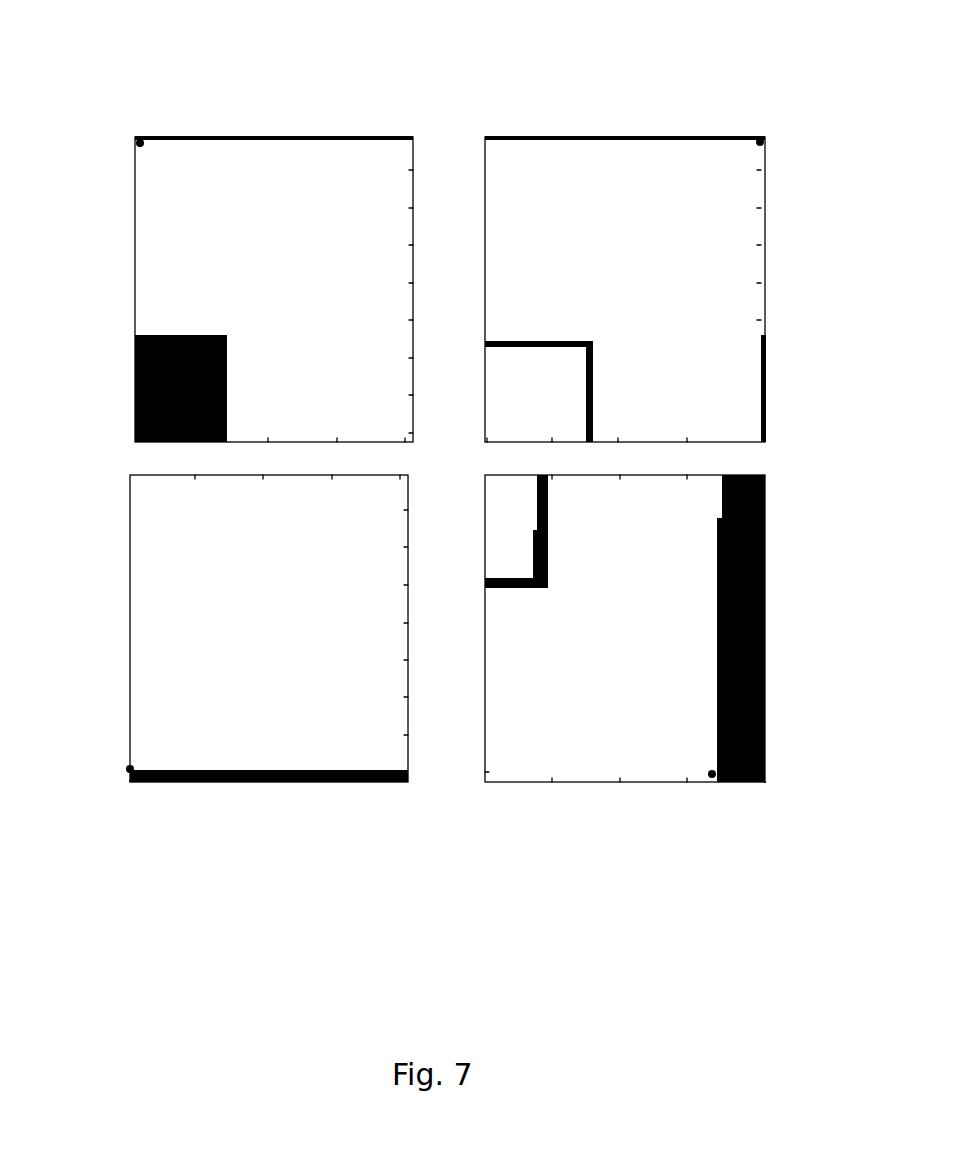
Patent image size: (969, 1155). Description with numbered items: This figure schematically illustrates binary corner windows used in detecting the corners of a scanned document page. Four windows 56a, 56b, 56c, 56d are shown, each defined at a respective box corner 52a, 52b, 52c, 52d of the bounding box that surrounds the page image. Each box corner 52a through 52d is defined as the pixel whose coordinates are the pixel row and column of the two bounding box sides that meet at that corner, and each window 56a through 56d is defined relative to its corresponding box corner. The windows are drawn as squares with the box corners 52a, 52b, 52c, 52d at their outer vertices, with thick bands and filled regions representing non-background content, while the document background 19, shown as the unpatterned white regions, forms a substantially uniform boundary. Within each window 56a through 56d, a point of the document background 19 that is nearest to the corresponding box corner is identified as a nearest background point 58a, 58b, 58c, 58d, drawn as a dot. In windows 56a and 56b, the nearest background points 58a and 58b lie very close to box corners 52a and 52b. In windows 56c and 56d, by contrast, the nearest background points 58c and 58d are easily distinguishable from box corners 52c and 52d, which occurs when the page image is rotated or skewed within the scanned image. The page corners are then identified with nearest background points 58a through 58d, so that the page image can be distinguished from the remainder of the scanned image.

The document background 19 is at (498, 182).
The box corner 52a is at (138, 137).
The box corner 52b is at (764, 138).
The box corner 52c is at (765, 782).
The box corner 52d is at (130, 781).
The window 56a is at (228, 106).
The window 56b is at (666, 83).
The window 56c is at (644, 827).
The window 56d is at (220, 829).
The nearest background point 58a is at (143, 146).
The nearest background point 58b is at (757, 145).
The nearest background point 58c is at (710, 771).
The nearest background point 58d is at (133, 766).